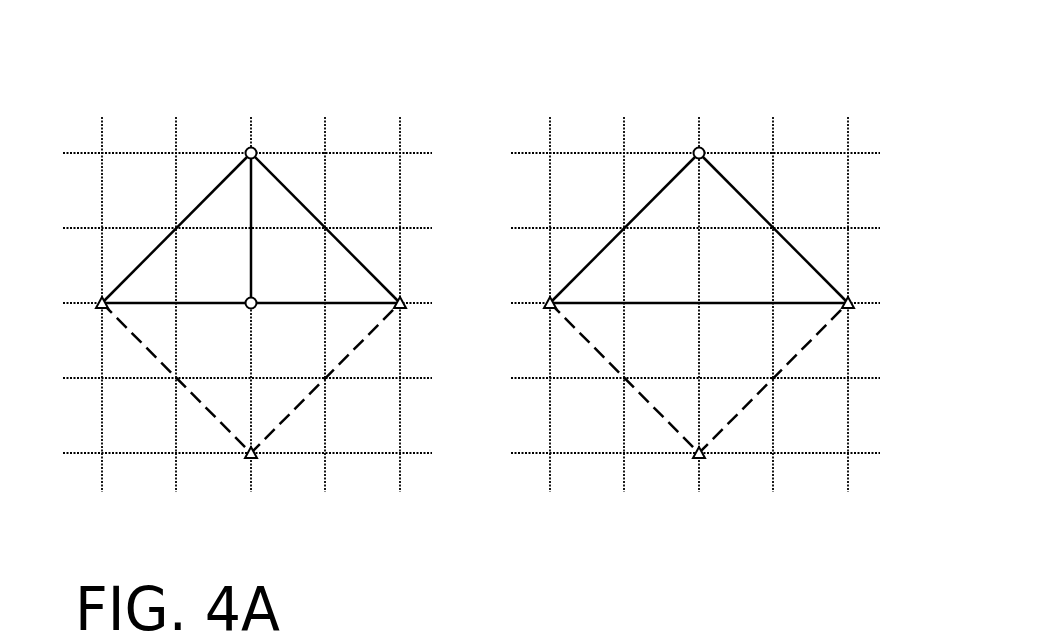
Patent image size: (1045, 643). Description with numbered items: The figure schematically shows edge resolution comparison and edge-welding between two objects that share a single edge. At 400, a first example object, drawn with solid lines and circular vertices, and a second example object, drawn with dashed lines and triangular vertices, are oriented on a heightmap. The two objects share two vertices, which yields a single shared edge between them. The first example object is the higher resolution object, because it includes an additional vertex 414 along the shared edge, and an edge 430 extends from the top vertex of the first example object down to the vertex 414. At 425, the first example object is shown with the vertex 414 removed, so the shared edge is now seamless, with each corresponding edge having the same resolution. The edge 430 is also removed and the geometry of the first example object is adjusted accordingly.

The first stage of edge resolution comparison 400 is at (175, 70).
The second stage of edge resolution comparison 425 is at (640, 58).
The vertex 414 is at (256, 297).
The edge 430 is at (250, 203).